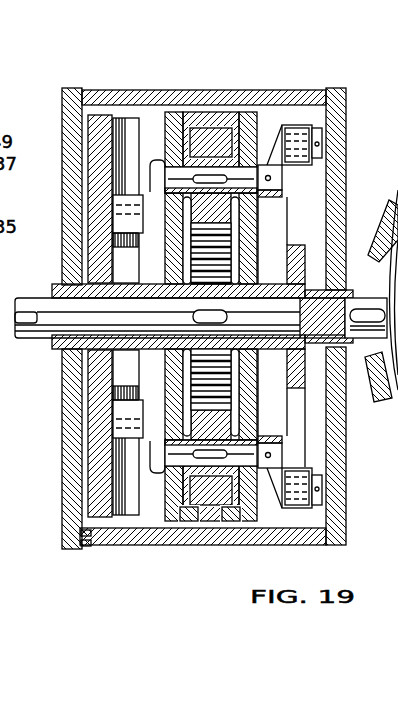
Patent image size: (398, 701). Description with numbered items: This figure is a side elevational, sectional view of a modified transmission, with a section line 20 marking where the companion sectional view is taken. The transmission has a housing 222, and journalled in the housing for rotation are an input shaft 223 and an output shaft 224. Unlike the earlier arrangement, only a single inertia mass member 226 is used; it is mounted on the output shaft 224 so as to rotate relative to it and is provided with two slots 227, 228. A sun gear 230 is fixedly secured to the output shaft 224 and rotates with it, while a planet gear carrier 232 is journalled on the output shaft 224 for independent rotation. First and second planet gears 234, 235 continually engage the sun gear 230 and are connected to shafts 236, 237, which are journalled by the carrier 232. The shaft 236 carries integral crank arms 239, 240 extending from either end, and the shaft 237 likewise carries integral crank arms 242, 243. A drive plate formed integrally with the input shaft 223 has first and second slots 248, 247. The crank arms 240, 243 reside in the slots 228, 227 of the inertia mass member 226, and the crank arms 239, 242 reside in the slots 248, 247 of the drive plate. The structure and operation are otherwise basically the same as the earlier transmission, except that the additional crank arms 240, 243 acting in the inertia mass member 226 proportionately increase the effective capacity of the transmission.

The section line 20- 20 is at (322, 267).
The housing 222 is at (72, 500).
The input shaft 223 is at (362, 300).
The output shaft 224 is at (50, 313).
The inertia mass member 226 is at (95, 482).
The slot 227 is at (115, 462).
The slot 228 is at (116, 123).
The sun gear 230 is at (228, 410).
The planet gear carrier 232 is at (176, 113).
The first planet gear 234 is at (222, 140).
The second planet gear 235 is at (177, 457).
The shaft 236 is at (199, 188).
The shaft 237 is at (158, 483).
The crank arm 239 is at (276, 128).
The crank arm 240 is at (143, 197).
The crank arm 242 is at (258, 482).
The crank arm 243 is at (150, 436).
The second slot 247 is at (225, 389).
The first slot 248 is at (302, 176).